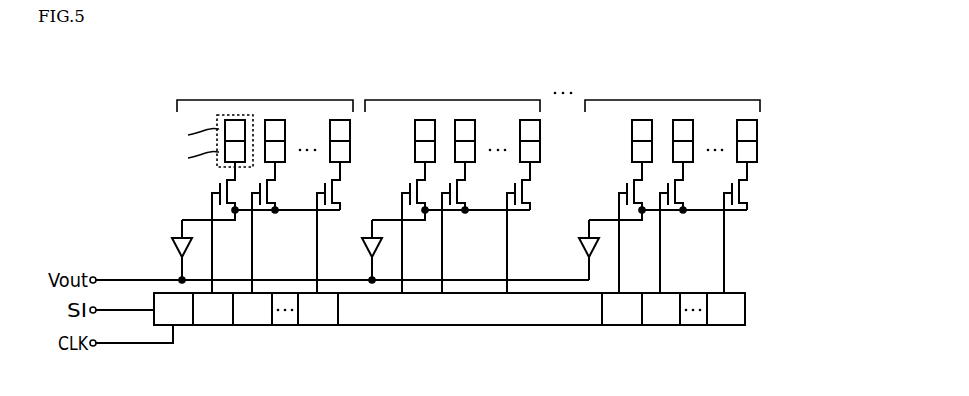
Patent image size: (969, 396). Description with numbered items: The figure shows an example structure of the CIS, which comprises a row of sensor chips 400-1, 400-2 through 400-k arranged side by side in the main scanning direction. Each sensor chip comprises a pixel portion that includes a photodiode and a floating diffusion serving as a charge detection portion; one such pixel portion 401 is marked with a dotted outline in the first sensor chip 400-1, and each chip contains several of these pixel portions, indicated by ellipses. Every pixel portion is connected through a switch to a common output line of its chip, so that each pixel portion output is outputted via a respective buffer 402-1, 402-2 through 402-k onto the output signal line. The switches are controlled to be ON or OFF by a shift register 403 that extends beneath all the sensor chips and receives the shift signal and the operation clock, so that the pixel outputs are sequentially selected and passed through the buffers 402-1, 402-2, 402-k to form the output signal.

The sensor chip 400-1 is at (277, 100).
The sensor chip 400-2 is at (440, 100).
The sensor chip 400-k is at (660, 100).
The pixel (photodiode PD and floating diffusion FD) 401 is at (217, 167).
The buffer 402-1 is at (172, 250).
The buffer 402-2 is at (366, 243).
The buffer 402-k is at (586, 246).
The shift register 403 is at (457, 325).